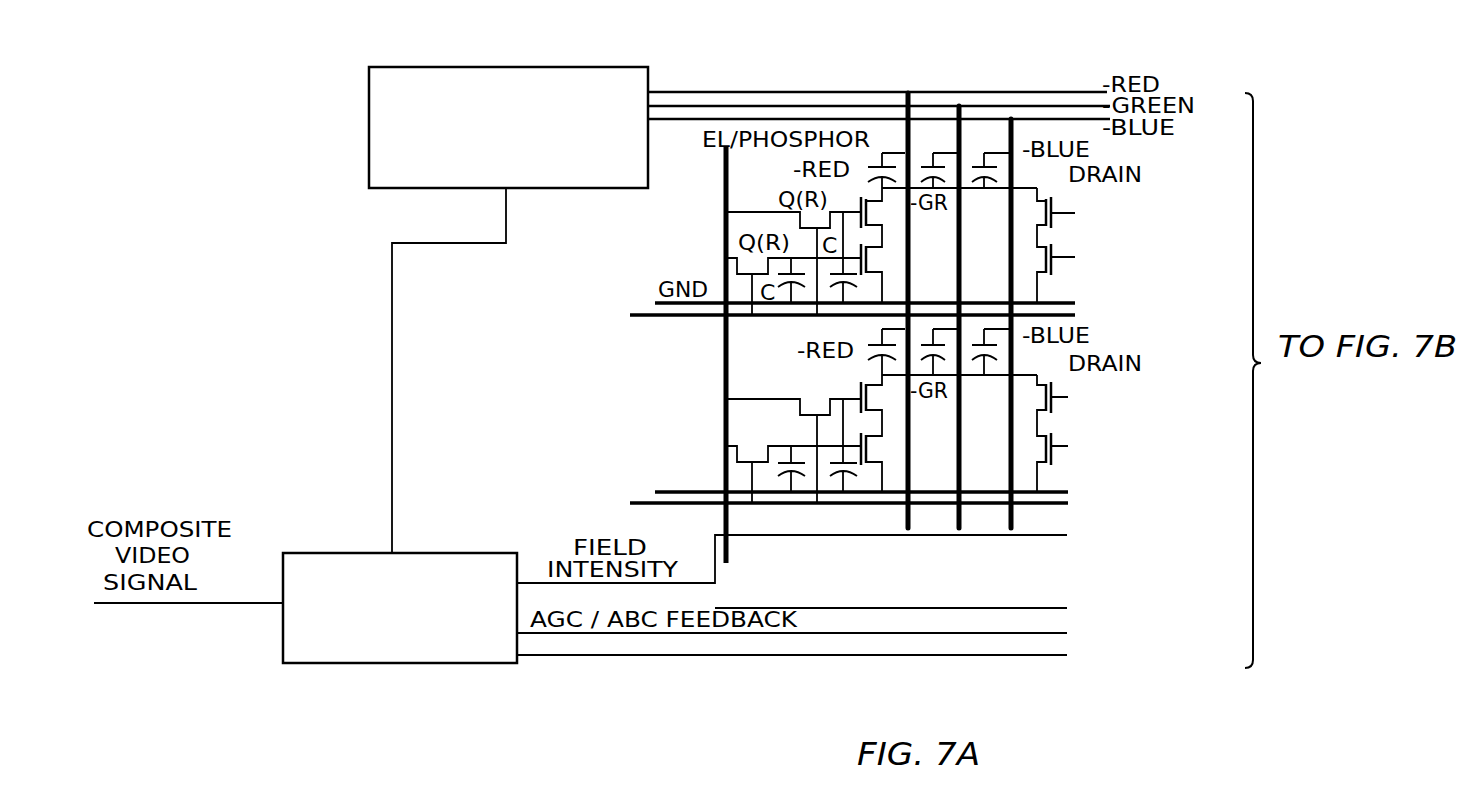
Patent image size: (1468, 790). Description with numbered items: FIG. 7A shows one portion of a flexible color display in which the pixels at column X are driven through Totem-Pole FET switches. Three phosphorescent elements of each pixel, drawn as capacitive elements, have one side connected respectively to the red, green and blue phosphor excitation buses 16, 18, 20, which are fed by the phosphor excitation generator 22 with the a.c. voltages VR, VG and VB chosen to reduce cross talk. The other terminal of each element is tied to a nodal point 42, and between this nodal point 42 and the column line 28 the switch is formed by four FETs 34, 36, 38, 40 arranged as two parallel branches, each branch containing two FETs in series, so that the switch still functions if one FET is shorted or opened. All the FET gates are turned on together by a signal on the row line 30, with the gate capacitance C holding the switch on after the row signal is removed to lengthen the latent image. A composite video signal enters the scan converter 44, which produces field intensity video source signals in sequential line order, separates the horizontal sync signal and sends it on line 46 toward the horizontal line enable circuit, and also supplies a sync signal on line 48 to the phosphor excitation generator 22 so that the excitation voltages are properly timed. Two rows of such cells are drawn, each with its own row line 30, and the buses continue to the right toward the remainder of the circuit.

The phosphor excitation bus 16 is at (891, 310).
The phosphor excitation bus 18 is at (946, 317).
The phosphor excitation bus 20 is at (992, 323).
The phosphor excitation generator 22 is at (508, 127).
The line (column) 28 is at (750, 356).
The line (row) 30 is at (833, 410).
The FET 34 is at (880, 310).
The FET 36 is at (880, 368).
The FET 38 is at (1034, 311).
The FET 40 is at (1034, 368).
The nodal point 42 is at (1048, 302).
The scan converter 44 is at (400, 608).
The line 46 is at (792, 665).
The line 48 is at (449, 370).